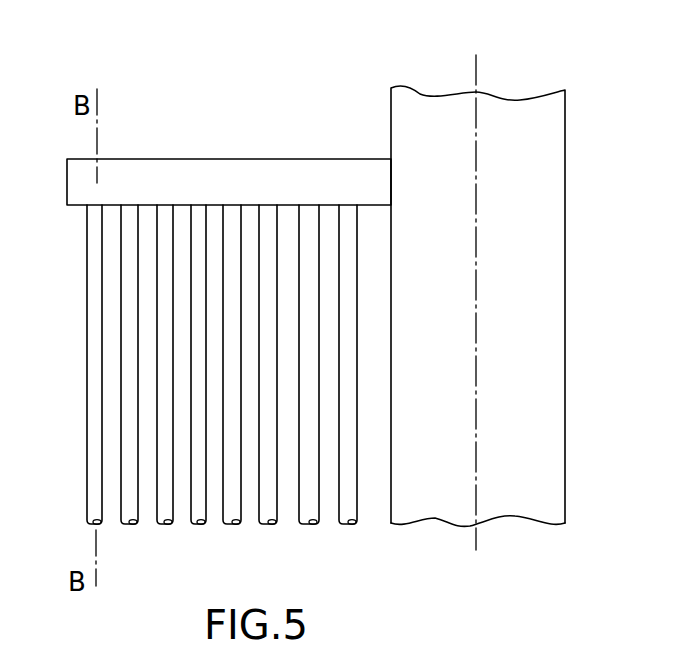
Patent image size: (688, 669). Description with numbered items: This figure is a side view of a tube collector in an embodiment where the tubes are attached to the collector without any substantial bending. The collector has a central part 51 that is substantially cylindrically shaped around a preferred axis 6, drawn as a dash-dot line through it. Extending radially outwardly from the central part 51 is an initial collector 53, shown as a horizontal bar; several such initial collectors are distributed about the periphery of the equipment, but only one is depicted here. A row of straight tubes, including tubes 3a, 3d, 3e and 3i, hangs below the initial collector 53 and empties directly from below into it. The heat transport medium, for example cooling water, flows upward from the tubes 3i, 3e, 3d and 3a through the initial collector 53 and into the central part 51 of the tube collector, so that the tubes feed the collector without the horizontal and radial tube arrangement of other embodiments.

The initial collector 53 is at (222, 173).
The central part 51 is at (537, 340).
The preferred axis 6 is at (476, 90).
The tube 3i is at (92, 466).
The tube 3e is at (196, 510).
The tube 3d is at (232, 508).
The tube 3a is at (351, 513).